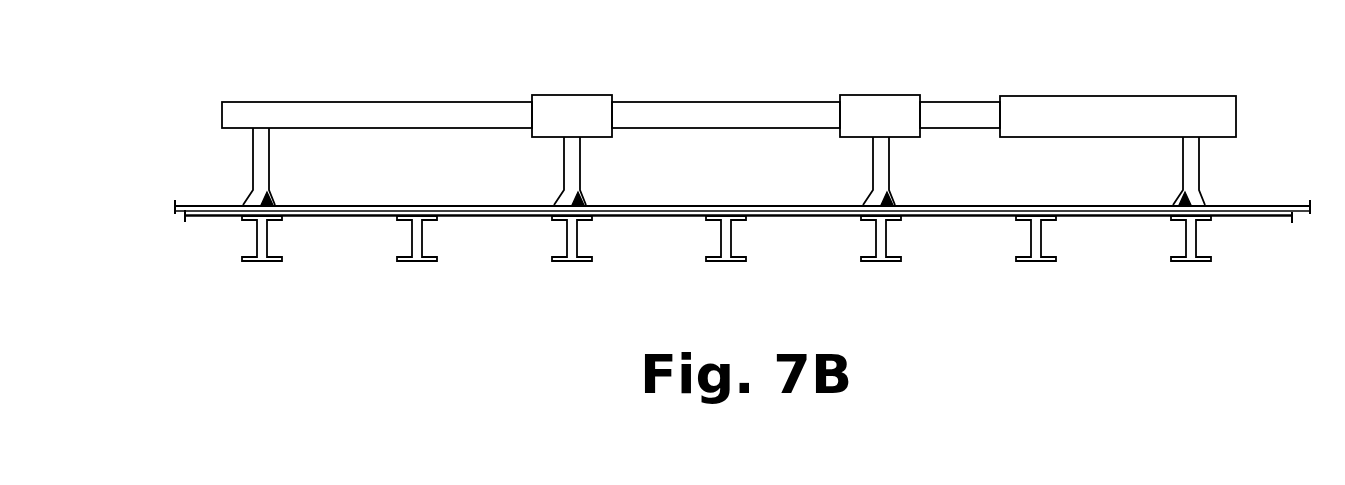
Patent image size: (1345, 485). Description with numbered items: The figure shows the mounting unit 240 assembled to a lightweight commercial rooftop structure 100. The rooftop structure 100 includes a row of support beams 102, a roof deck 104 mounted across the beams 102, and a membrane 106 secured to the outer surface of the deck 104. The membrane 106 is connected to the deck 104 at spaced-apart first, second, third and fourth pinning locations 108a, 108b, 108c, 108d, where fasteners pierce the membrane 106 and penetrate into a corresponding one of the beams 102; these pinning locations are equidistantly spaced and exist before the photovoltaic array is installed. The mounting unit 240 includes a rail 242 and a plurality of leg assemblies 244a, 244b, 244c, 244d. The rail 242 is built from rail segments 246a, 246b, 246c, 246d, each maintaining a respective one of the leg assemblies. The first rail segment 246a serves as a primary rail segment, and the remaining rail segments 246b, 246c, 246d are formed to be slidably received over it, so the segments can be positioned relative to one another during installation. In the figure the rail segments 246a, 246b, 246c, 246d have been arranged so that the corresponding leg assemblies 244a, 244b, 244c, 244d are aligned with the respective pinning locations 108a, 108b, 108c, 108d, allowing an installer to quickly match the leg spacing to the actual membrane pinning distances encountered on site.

The rooftop structure 100 is at (696, 235).
The support beams 102 is at (697, 258).
The roof deck 104 is at (1113, 221).
The membrane 106 is at (993, 205).
The first pinning location 108a is at (305, 176).
The second pinning location 108b is at (615, 174).
The third pinning location 108c is at (922, 174).
The fourth pinning location 108d is at (1184, 195).
The mounting unit 240 is at (378, 72).
The rail 242 is at (703, 110).
The first leg assembly 244a is at (251, 166).
The second leg assembly 244b is at (553, 171).
The third leg assembly 244c is at (857, 171).
The fourth leg assembly 244d is at (1213, 156).
The first rail segment 246a is at (323, 107).
The second rail segment 246b is at (568, 102).
The third rail segment 246c is at (875, 102).
The fourth rail segment 246d is at (1107, 103).